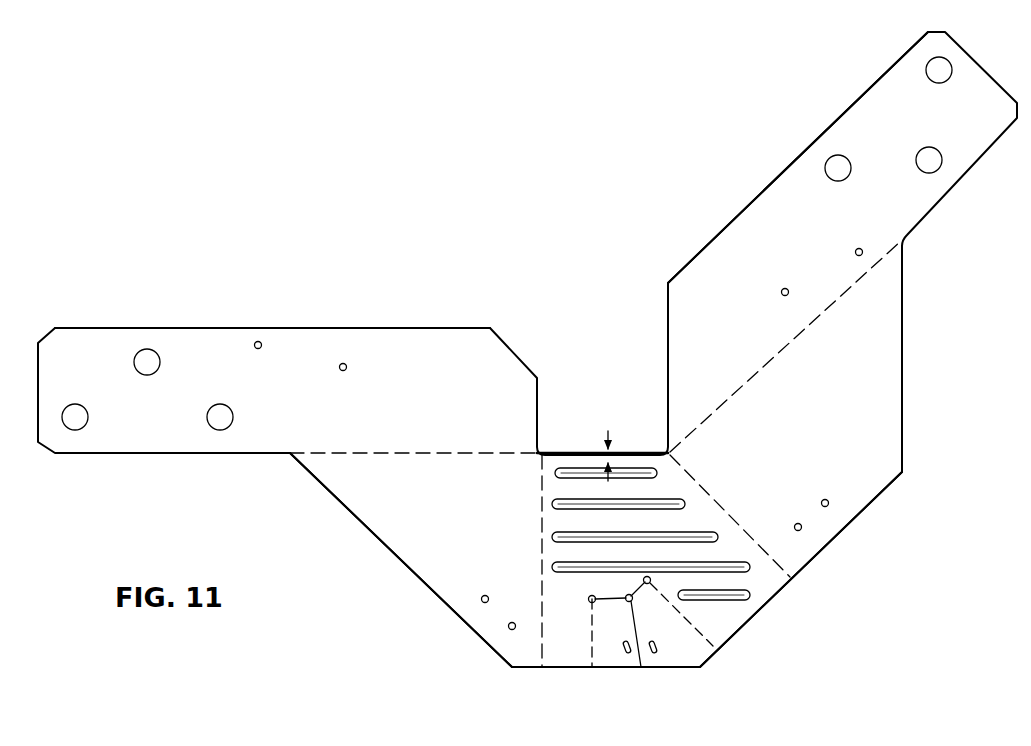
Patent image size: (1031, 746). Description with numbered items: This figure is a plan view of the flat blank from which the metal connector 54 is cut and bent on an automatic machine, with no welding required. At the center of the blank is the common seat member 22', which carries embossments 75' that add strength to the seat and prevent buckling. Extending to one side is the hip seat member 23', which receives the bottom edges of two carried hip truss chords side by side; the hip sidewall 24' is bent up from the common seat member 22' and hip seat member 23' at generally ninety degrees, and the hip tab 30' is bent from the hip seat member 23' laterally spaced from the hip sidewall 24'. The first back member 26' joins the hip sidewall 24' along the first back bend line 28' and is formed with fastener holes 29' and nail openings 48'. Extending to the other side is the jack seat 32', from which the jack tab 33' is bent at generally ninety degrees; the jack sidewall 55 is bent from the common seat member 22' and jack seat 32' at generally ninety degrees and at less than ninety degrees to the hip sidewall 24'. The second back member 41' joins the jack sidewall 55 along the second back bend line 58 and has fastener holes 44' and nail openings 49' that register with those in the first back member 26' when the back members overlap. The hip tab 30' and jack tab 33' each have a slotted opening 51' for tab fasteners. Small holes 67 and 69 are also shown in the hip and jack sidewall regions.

The metal connector 54 is at (906, 346).
The second back member 41' is at (272, 315).
The fastener holes 44' is at (147, 389).
The nail openings 49' is at (301, 362).
The second back bend line 58 is at (427, 455).
The jack sidewall 55 is at (475, 525).
The small holes 69 is at (508, 626).
The jack seat 32' is at (550, 580).
The common seat member 22' is at (620, 485).
The embossments 75' is at (652, 534).
The jack tab 33' is at (606, 641).
The slotted opening 51' is at (649, 669).
The hip tab 30' is at (685, 641).
The hip seat member 23' is at (786, 561).
The hip sidewall 24' is at (854, 359).
The small holes 67 is at (802, 529).
The first back bend line 28' is at (786, 346).
The nail openings 48' is at (822, 262).
The first back member 26' is at (798, 157).
The fastener holes 29' is at (888, 119).